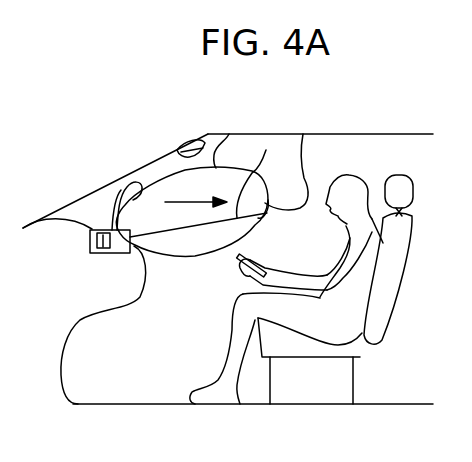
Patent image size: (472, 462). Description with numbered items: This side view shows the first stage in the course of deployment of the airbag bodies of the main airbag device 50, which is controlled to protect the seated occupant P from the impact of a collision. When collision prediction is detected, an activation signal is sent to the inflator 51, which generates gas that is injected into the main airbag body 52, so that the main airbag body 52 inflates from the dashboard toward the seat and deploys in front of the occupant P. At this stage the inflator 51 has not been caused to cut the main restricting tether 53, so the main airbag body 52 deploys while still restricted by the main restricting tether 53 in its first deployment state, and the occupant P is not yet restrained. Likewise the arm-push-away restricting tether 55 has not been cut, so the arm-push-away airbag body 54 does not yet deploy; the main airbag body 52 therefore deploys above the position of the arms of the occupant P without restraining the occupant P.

The main airbag device 50 is at (110, 254).
The inflator 51 is at (101, 228).
The main airbag body 52 is at (229, 134).
The main restricting tether 53 is at (140, 186).
The arm-push-away airbag body 54 is at (303, 134).
The arm-push-away restricting tether 55 is at (266, 150).
The occupant P is at (344, 174).